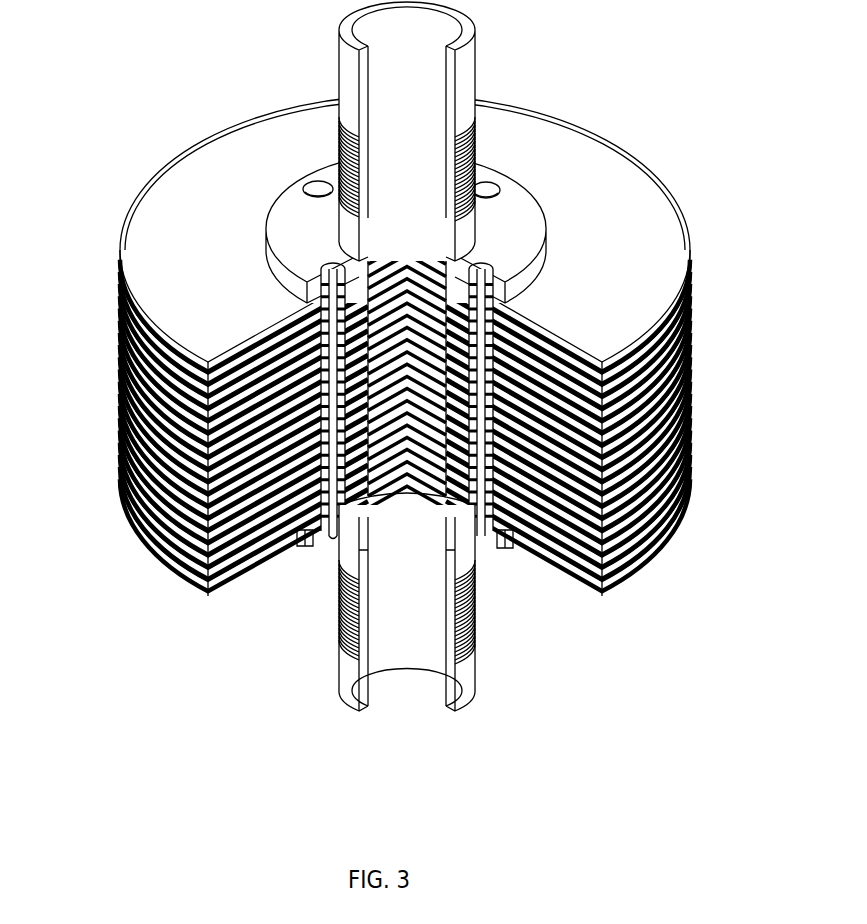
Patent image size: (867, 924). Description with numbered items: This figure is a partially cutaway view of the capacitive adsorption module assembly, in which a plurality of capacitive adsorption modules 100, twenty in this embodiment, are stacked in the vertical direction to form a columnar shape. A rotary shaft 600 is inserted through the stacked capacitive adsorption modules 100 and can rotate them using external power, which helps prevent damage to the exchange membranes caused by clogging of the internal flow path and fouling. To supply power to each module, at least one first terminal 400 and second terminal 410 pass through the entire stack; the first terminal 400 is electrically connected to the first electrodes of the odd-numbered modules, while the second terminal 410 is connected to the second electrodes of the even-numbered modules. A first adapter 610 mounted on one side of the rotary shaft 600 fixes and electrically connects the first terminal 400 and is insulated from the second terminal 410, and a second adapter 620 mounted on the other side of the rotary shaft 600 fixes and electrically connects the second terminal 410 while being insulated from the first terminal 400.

The capacitive adsorption module 100 is at (103, 248).
The first terminal 400 is at (320, 186).
The second terminal 410 is at (335, 528).
The rotary shaft 600 is at (472, 530).
The first adapter 610 is at (500, 47).
The second adapter 620 is at (500, 662).